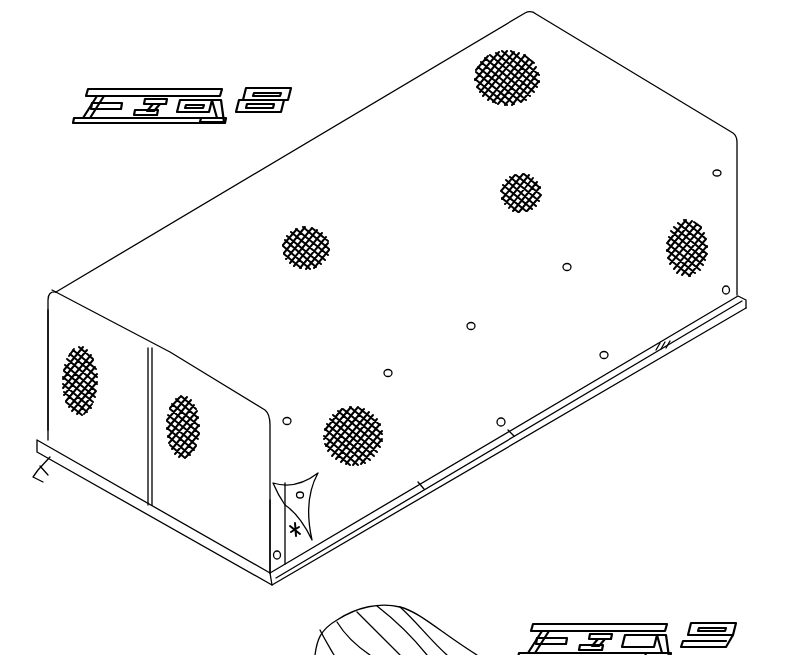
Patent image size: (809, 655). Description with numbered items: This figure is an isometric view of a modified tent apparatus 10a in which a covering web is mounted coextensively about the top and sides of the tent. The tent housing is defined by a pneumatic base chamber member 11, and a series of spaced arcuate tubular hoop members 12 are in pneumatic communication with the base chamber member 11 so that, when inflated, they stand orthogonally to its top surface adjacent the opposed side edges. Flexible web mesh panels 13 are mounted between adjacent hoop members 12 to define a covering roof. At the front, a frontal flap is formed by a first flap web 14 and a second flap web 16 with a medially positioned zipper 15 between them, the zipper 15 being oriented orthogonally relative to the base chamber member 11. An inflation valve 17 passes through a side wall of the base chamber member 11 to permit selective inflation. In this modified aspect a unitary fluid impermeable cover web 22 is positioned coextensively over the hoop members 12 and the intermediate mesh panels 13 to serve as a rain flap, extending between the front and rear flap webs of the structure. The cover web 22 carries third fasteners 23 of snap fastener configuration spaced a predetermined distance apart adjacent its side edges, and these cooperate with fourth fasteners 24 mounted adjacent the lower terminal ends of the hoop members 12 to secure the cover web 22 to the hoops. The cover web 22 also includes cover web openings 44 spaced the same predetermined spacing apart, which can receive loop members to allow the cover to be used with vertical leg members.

The modified tent apparatus 10a is at (686, 71).
The pneumatic base chamber member 11 is at (366, 537).
The arcuate tubular hoop members 12 is at (272, 532).
The flexible web mesh panels 13 is at (298, 550).
The first flap web 14 is at (127, 476).
The zipper 15 is at (160, 490).
The second flap web 16 is at (220, 535).
The inflation valve 17 is at (52, 479).
The cover web 22 is at (444, 453).
The third fasteners 23 is at (283, 562).
The fourth fasteners 24 is at (504, 420).
The cover web openings 44 is at (474, 324).